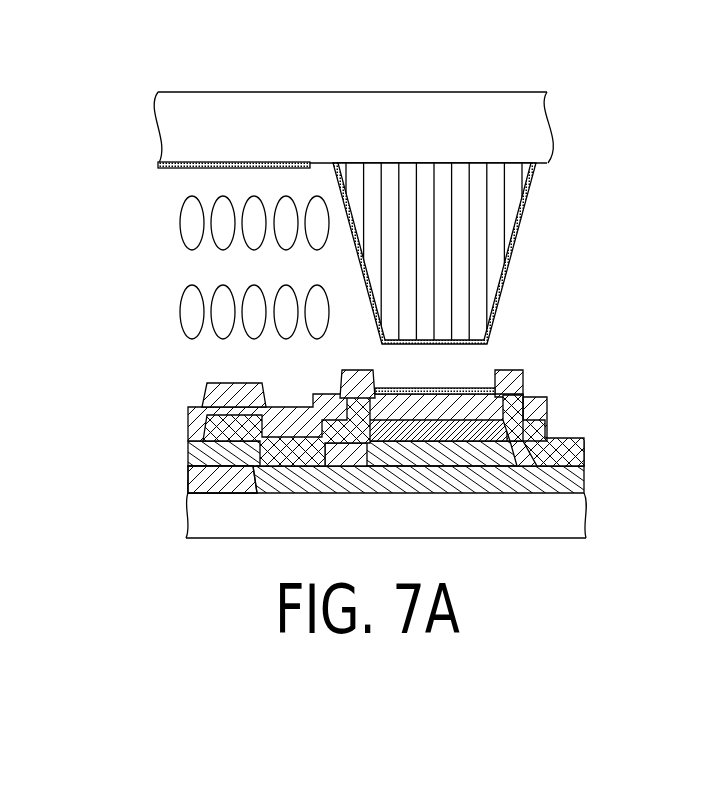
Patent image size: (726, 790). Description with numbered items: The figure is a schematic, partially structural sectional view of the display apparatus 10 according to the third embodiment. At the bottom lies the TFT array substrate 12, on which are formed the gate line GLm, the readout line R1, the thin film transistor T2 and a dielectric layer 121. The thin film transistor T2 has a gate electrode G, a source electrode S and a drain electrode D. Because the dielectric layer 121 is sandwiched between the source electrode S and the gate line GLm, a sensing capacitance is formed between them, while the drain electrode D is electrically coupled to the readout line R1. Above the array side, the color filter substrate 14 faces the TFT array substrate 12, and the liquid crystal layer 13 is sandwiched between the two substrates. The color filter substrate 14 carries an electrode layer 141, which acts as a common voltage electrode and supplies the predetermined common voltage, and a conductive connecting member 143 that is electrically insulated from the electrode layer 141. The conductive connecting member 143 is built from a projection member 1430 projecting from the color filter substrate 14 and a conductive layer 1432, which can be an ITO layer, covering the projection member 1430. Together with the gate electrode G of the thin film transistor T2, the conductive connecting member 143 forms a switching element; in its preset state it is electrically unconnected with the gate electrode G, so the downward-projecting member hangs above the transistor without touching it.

The display apparatus 10 is at (386, 58).
The color filter substrate 14 is at (582, 118).
The electrode layer 141 is at (163, 167).
The liquid crystal layer 13 is at (170, 270).
The conductive connecting member 143 is at (503, 253).
The projection member 1430 is at (506, 222).
The conductive layer 1432 is at (506, 256).
The TFT array substrate 12 is at (636, 502).
The dielectric layer 121 is at (188, 452).
The gate line GLm is at (188, 477).
The thin film transistor T2 is at (538, 388).
The gate electrode G is at (478, 386).
The source electrode S is at (188, 413).
The drain electrode D is at (548, 418).
The readout line R1 is at (585, 446).